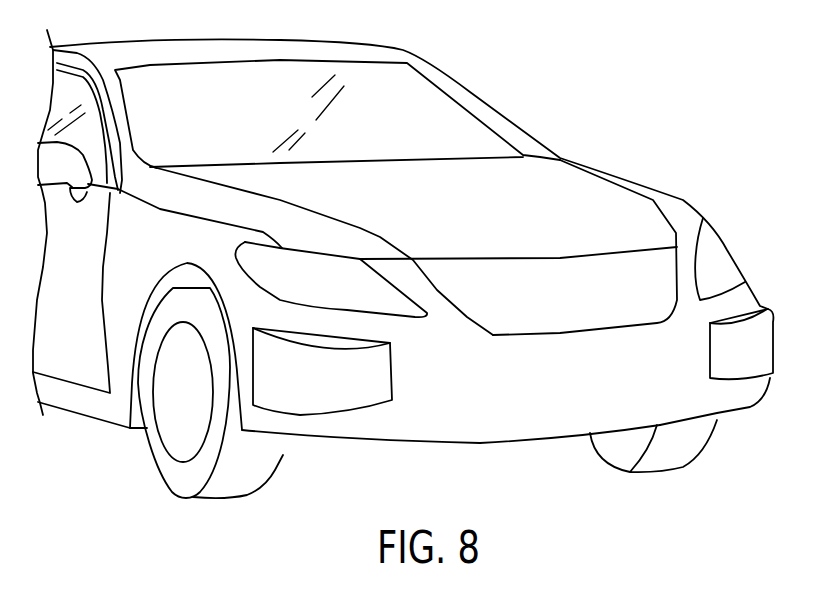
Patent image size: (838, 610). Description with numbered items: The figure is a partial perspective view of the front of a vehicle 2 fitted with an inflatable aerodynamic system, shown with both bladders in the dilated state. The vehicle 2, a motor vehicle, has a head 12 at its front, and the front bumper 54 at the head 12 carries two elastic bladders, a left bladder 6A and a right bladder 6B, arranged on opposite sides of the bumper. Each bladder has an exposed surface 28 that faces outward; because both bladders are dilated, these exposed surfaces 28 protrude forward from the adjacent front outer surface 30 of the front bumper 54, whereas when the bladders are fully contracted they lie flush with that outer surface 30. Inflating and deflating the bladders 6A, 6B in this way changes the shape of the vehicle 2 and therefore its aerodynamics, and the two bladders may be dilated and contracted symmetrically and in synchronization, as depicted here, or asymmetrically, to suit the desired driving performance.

The vehicle 2 is at (574, 105).
The head 12 is at (777, 398).
The left bladder 6A is at (287, 407).
The right bladder 6B is at (767, 318).
The exposed surface 28 is at (317, 377).
The adjacent outer surface 30 is at (410, 410).
The front bumper 54 is at (553, 417).